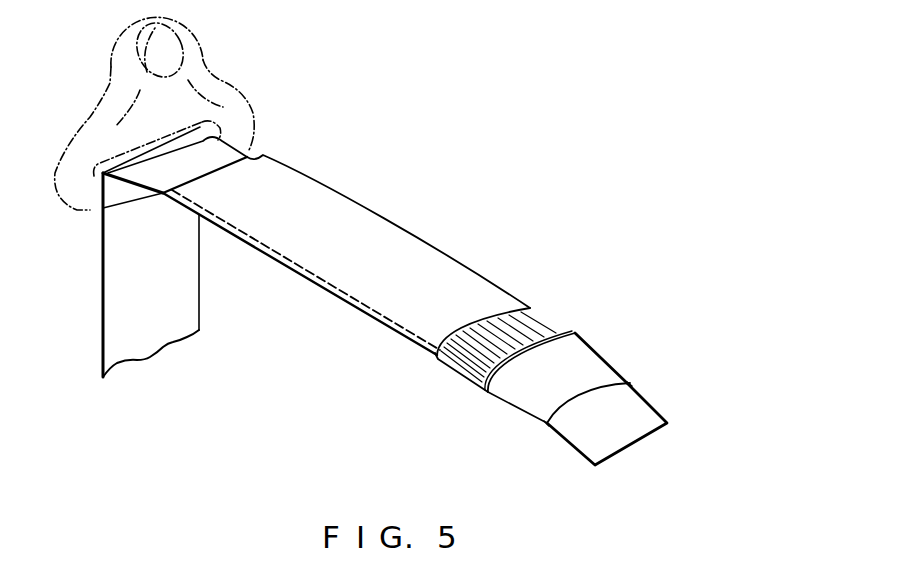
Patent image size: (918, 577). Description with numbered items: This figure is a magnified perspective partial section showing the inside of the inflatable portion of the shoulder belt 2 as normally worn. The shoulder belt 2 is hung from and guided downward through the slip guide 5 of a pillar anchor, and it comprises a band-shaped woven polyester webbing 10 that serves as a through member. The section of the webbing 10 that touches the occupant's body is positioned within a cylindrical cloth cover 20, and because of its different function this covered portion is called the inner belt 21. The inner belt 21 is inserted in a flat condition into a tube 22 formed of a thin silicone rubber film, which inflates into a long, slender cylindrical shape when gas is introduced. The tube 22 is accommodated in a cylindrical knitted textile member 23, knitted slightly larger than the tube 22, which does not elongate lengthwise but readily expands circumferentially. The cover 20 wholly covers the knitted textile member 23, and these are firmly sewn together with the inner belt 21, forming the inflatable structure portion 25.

The shoulder belt 2 is at (450, 298).
The slip guide 5 is at (218, 75).
The webbing 10 is at (103, 296).
The cover 20 is at (462, 269).
The inner belt 21 is at (658, 407).
The tube 22 is at (612, 369).
The knitted textile member 23 is at (570, 329).
The inflatable structure portion 25 is at (383, 338).